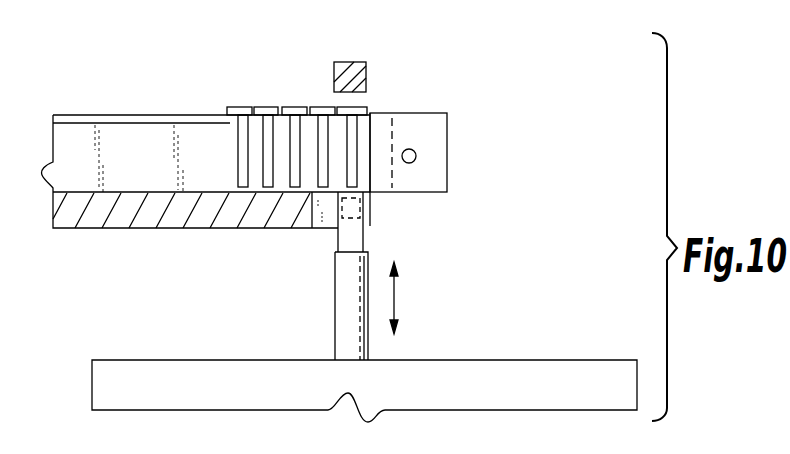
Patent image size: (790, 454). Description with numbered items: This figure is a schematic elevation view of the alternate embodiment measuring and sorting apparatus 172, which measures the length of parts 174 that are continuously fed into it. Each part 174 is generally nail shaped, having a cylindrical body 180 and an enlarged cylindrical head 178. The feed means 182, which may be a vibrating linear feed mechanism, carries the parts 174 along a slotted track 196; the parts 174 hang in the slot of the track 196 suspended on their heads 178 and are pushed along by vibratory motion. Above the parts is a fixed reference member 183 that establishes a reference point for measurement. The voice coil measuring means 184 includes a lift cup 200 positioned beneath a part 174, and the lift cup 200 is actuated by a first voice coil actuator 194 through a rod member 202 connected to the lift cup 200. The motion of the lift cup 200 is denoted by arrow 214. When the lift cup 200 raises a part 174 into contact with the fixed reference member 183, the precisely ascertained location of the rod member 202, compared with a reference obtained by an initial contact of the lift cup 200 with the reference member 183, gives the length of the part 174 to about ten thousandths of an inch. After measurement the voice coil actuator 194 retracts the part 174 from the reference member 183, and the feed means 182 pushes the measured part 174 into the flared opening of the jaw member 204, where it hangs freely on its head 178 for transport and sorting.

The measuring and sorting apparatus 172 is at (474, 96).
The parts 174 is at (246, 106).
The enlarged cylindrical head 178 is at (237, 107).
The cylindrical body 180 is at (240, 165).
The feed means 182 is at (68, 132).
The fixed reference member 183 is at (368, 70).
The voice coil measuring means 184 is at (440, 253).
The first voice coil actuator 194 is at (545, 360).
The slotted track 196 is at (83, 118).
The lift cup 200 is at (358, 238).
The rod member 202 is at (336, 278).
The jaw member 204 is at (447, 133).
The arrow 214 is at (397, 306).